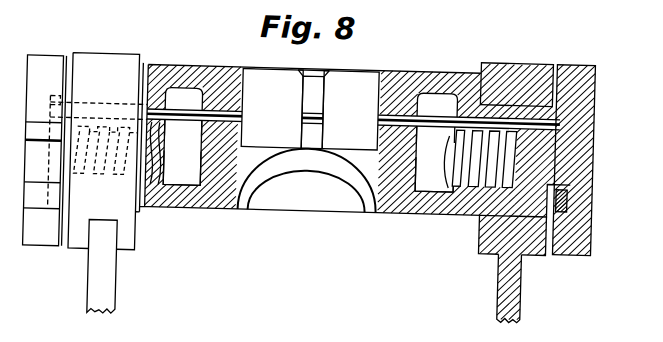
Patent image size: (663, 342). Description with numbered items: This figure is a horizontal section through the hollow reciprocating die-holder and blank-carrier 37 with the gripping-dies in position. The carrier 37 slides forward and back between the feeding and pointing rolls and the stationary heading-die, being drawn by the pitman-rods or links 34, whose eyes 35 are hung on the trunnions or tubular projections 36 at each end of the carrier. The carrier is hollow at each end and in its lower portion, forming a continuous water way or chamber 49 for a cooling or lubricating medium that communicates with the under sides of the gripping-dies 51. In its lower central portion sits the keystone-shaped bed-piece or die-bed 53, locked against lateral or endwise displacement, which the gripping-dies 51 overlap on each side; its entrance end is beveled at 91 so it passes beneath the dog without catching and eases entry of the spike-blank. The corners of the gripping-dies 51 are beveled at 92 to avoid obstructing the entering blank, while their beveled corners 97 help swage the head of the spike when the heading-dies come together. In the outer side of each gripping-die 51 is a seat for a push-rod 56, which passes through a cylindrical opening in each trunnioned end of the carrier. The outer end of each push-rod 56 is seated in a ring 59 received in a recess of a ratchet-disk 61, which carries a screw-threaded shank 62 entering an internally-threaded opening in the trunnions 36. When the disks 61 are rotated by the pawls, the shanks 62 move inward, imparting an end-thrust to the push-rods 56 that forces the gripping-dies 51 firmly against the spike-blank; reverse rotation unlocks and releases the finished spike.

The pitman-rods or links 34 is at (92, 280).
The eyes 35 is at (100, 51).
The trunnions or tubular projections 36 is at (482, 205).
The hollow reciprocating die-holder and blank-carrier 37 is at (308, 180).
The water way or chamber 49 is at (308, 171).
The gripping-dies 51 is at (310, 110).
The bed-piece or die-bed 53 is at (313, 112).
The push-rod 56 is at (309, 133).
The ring 59 is at (569, 191).
The ratchet-disk 61 is at (26, 111).
The screw-threaded shank 62 is at (507, 155).
The beveled entrance end 91 is at (312, 66).
The beveled corners 92 is at (298, 68).
The beveled corners 97 is at (302, 144).